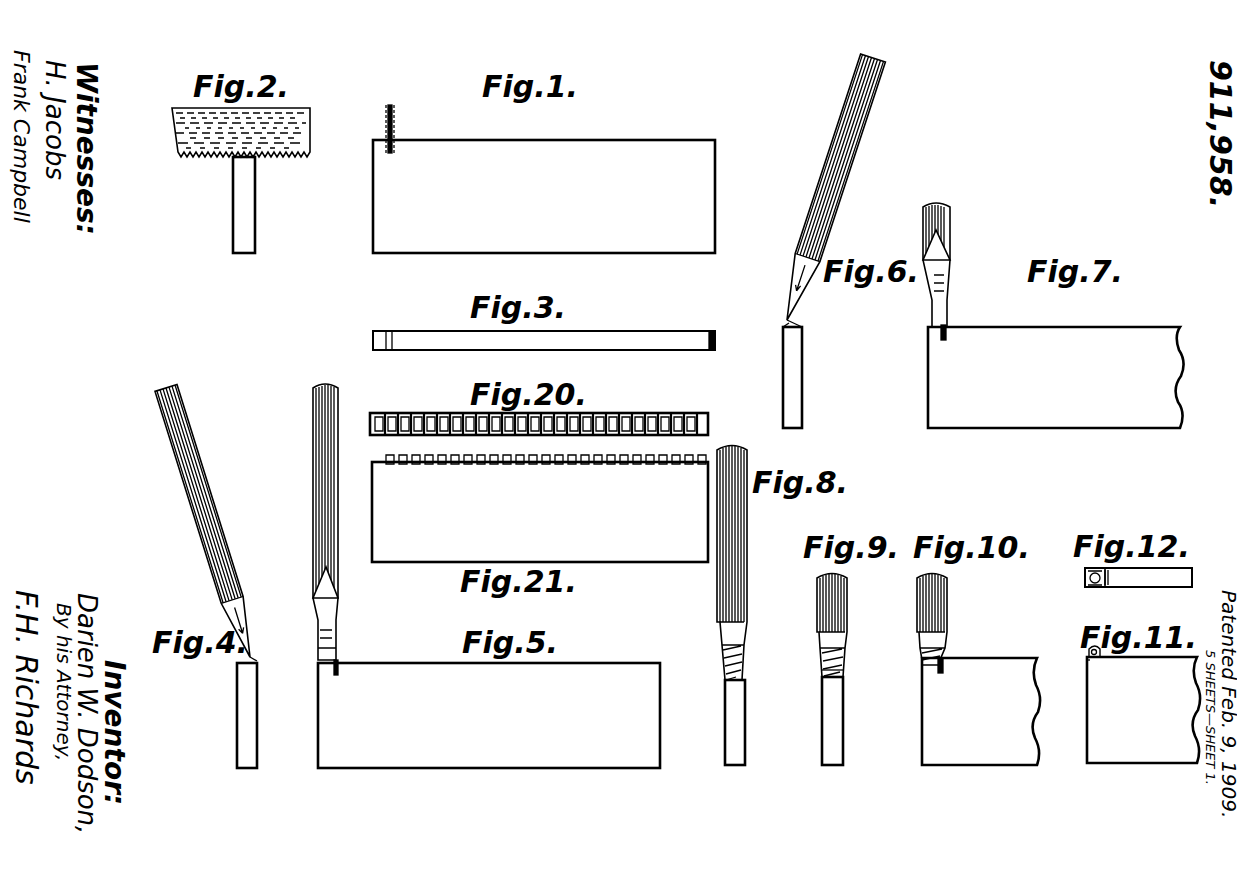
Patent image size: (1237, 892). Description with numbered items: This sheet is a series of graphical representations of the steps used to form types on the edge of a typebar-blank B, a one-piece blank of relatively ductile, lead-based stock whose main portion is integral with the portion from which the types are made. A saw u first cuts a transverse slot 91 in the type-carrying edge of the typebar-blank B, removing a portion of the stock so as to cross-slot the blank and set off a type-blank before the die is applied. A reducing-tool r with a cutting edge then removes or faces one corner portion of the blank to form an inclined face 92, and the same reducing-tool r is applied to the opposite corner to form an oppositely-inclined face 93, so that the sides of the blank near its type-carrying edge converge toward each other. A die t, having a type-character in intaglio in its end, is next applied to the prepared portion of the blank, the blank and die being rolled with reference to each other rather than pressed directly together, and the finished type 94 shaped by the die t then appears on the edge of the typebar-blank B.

In FIG. 1, the transverse slot 91 is at (392, 150).
In FIG. 3, the transverse slot 91 is at (390, 331).
In FIG. 20, the transverse slot 91 is at (468, 413).
In FIG. 21, the transverse slot 91 is at (606, 463).
In FIG. 5, the transverse slot 91 is at (336, 663).
In FIG. 7, the transverse slot 91 is at (950, 322).
In FIG. 10, the transverse slot 91 is at (943, 662).
In FIG. 12, the transverse slot 91 is at (1085, 661).
In FIG. 4, the inclined face 92 is at (257, 662).
In FIG. 6, the inclined face 92 is at (802, 328).
In FIG. 6, the oppositely-inclined face 93 is at (783, 328).
In FIG. 7, the oppositely-inclined face 93 is at (928, 334).
In FIG. 9, the finished type 94 is at (838, 671).
In FIG. 12, the finished type 94 is at (1085, 577).
In FIG. 11, the finished type 94 is at (1100, 658).
In FIG. 1, the typebar-blank B is at (373, 200).
In FIG. 2, the typebar-blank B is at (255, 196).
In FIG. 3, the typebar-blank B is at (703, 351).
In FIG. 20, the typebar-blank B is at (539, 424).
In FIG. 21, the typebar-blank B is at (652, 555).
In FIG. 4, the typebar-blank B is at (236, 720).
In FIG. 5, the typebar-blank B is at (648, 718).
In FIG. 6, the typebar-blank B is at (800, 364).
In FIG. 7, the typebar-blank B is at (930, 364).
In FIG. 8, the typebar-blank B is at (725, 711).
In FIG. 9, the typebar-blank B is at (843, 723).
In FIG. 10, the typebar-blank B is at (922, 716).
In FIG. 12, the typebar-blank B is at (1185, 588).
In FIG. 11, the typebar-blank B is at (1143, 710).
In FIG. 1, the saw u is at (386, 108).
In FIG. 2, the saw u is at (251, 120).
In FIG. 4, the reducing-tool r is at (215, 517).
In FIG. 5, the reducing-tool r is at (313, 505).
In FIG. 6, the reducing-tool r is at (830, 227).
In FIG. 7, the reducing-tool r is at (932, 228).
In FIG. 8, the die t is at (745, 596).
In FIG. 9, the die t is at (817, 592).
In FIG. 10, the die t is at (917, 591).